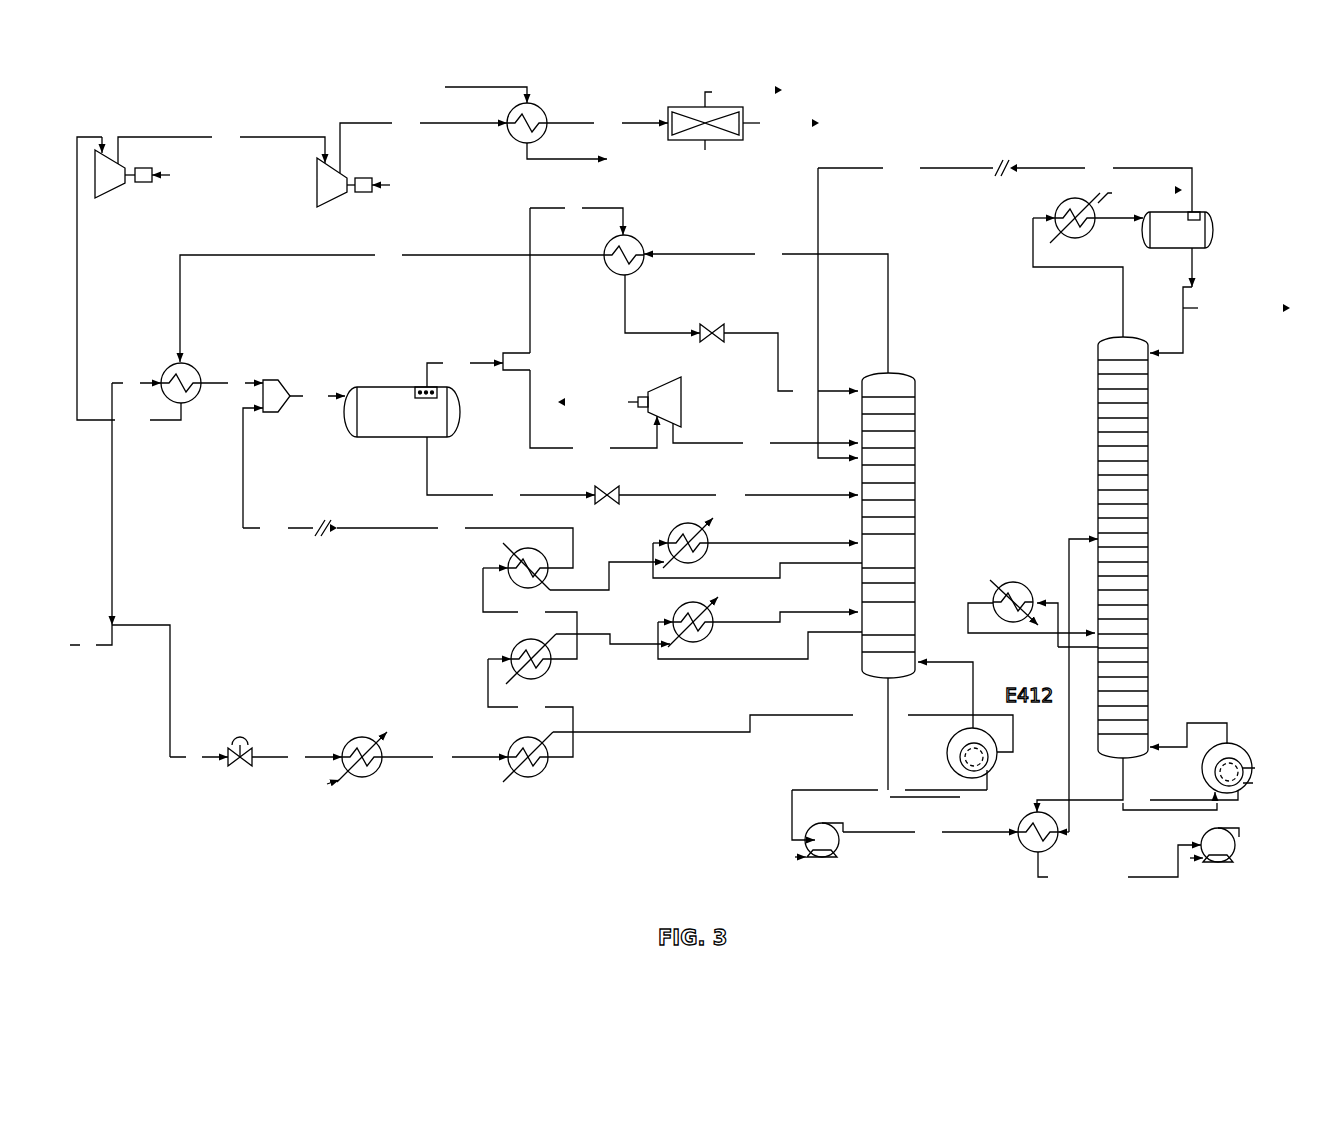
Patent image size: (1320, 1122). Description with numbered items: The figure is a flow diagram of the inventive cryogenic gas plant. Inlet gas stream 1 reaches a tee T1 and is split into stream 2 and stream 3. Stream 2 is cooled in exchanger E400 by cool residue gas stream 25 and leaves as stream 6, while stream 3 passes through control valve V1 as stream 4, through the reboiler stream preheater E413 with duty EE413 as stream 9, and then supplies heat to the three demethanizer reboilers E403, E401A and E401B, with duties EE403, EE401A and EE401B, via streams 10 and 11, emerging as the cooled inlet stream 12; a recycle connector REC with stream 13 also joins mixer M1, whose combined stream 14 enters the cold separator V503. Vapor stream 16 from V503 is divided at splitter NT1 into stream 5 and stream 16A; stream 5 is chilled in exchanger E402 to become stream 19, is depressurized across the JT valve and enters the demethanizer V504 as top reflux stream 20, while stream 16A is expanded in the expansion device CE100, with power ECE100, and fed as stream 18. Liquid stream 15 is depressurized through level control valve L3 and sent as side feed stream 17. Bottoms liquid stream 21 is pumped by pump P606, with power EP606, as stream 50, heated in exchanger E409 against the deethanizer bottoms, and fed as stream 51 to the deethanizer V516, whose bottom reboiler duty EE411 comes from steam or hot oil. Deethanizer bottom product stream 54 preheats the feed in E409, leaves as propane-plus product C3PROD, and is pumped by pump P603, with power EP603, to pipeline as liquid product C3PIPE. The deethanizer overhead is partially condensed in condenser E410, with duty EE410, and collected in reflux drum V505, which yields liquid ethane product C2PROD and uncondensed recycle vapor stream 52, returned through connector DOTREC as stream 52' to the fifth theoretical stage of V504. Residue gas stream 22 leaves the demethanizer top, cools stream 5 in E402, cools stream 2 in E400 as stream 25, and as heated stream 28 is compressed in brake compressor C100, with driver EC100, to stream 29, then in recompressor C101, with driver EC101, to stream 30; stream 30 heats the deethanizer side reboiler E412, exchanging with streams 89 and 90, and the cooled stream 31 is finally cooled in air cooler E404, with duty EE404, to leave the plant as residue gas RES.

The feed stream 1 is at (91, 640).
The feed tee T1 is at (129, 691).
The inlet gas stream 2 is at (136, 498).
The heated residue gas stream 28 is at (129, 284).
The brake compressor C100 is at (141, 179).
The compressor C100 driver EC100 is at (193, 175).
The brake compressor discharge stream 29 is at (221, 145).
The recompressor C101 is at (362, 189).
The compressor C101 driver EC101 is at (413, 185).
The recompressor discharge stream 30 is at (423, 142).
The deethanizer side reboiler E412 is at (500, 135).
The coolant inlet stream 89 is at (486, 95).
The cooled compressed stream 31 is at (607, 123).
The coolant outlet stream 90 is at (567, 159).
The air cooler E404 is at (705, 136).
The E404 energy stream EE404 is at (743, 93).
The residue product stream RES is at (781, 123).
The reflux stream 5 is at (576, 275).
The reflux exchanger E402 is at (650, 244).
The cool residue gas stream 25 is at (392, 303).
The demethanizer residue gas stream 22 is at (766, 308).
The chilled reflux stream 19 is at (654, 304).
The Joule-Thomson expansion valve JT is at (711, 321).
The expanded stream to V504 20 is at (791, 367).
The inlet gas exchanger E400 is at (200, 371).
The stream to mixer M1 6 is at (232, 383).
The mixer M1 is at (288, 405).
The mixed stream to V503 14 is at (317, 396).
The recycle stream 13 is at (290, 473).
The recycle connector REC is at (317, 553).
The resultant inlet stream 12 is at (455, 542).
The cold separator V503 is at (402, 412).
The cold separator vapor stream 16 is at (465, 369).
The stream splitter NT1 is at (510, 373).
The expander feed stream 16A is at (593, 414).
The expansion device CE100 is at (688, 409).
The expander energy stream ECE100 is at (599, 402).
The expander outlet stream 18 is at (765, 438).
The cold separator liquid stream 15 is at (511, 471).
The level control valve L3 is at (607, 506).
The liquid feed to V504 17 is at (738, 495).
The recycle stream to V504 52' is at (917, 307).
The recycle connector DOTREC is at (1007, 151).
The recycle vapor stream 52 is at (1102, 184).
The demethanizer V504 is at (870, 581).
The demethanizer side reboiler E401B is at (500, 566).
The E401B energy stream EE401B is at (607, 578).
The stream to E401A 11 is at (530, 613).
The demethanizer side reboiler E401A is at (507, 658).
The E401A energy stream EE401A is at (613, 633).
The stream to E403 10 is at (530, 708).
The demethanizer side reboiler E403 is at (515, 749).
The stream from E413 9 is at (445, 757).
The E403 energy stream EE403 is at (783, 707).
The demethanizer bottoms liquid stream 21 is at (889, 809).
The demethanizer bottoms pump P606 is at (830, 856).
The pump P606 energy EP606 is at (770, 857).
The pumped bottoms stream 50 is at (930, 832).
The feed/bottoms cross exchanger E409 is at (1018, 844).
The heated demethanizer bottoms stream 51 is at (1078, 685).
The deethanizer bottom product stream 54 is at (1137, 785).
The propane-plus product stream C3PROD is at (1119, 866).
The product pump P603 is at (1227, 859).
The pump P603 energy EP603 is at (1161, 858).
The liquid product stream C3PIPE is at (1277, 836).
The reboiler E411 energy EE411 is at (1235, 758).
The deethanizer V516 is at (1106, 563).
The deethanizer overhead condenser E410 is at (1088, 265).
The E410 energy stream EE410 is at (1140, 191).
The overhead reflux drum V505 is at (1177, 282).
The ethane product stream C2PROD is at (1236, 308).
The reboiler inlet gas stream 3 is at (199, 757).
The control valve V1 is at (240, 763).
The stream to E413 4 is at (297, 757).
The reboiler stream preheater E413 is at (341, 754).
The E413 energy stream EE413 is at (300, 780).